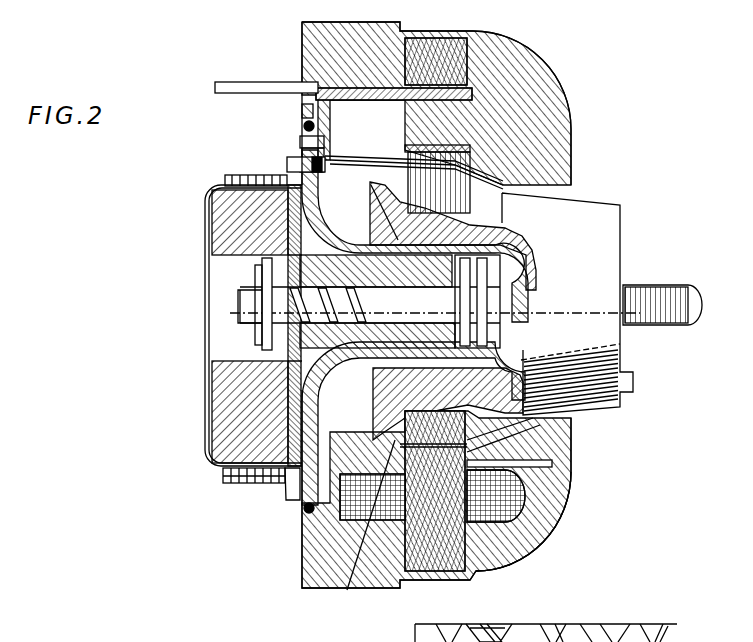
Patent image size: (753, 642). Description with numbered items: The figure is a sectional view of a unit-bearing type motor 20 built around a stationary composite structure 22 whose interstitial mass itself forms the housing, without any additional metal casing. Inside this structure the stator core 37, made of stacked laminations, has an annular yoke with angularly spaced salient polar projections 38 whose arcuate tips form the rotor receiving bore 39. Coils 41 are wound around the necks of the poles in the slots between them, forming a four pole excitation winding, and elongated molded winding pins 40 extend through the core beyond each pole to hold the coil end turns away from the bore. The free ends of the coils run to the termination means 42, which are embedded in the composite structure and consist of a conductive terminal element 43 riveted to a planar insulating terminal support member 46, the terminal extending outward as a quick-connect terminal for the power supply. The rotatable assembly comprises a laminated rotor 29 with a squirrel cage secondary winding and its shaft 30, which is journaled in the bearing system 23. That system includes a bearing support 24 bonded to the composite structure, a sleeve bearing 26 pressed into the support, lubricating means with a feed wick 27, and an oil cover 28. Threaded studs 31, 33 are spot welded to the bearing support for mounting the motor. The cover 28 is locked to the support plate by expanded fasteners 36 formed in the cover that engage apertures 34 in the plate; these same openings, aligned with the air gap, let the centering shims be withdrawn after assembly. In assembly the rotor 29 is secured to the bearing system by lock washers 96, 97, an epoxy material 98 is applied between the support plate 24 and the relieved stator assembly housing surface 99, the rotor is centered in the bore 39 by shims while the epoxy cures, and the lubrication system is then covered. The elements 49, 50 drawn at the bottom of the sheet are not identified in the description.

The unit-bearing type motor 20 is at (302, 572).
The stationary composite structure 22 is at (548, 76).
The bearing system 23 is at (299, 383).
The bearing support 24 is at (302, 110).
The sleeve bearing 26 is at (326, 268).
The feed wick 27 is at (301, 377).
The oil cover 28 is at (210, 460).
The rotor 29 is at (623, 215).
The shaft 30 is at (408, 300).
The threaded stud 31 is at (237, 176).
The threaded stud 33 is at (238, 486).
The apertures 34 is at (300, 148).
The expanded fasteners 36 is at (287, 162).
The stator core 37 is at (466, 568).
The salient polar projections 38 is at (573, 443).
The rotor receiving bore 39 is at (468, 150).
The winding pins 40 is at (556, 464).
The coils 41 is at (519, 496).
The termination means 42 is at (345, 82).
The conductive terminal element 43 is at (236, 83).
The insulating terminal support member 46 is at (488, 62).
The element 49 is at (565, 641).
The element 50 is at (600, 640).
The lock washer 96 is at (262, 339).
The lock washer 97 is at (466, 304).
The epoxy material 98 is at (305, 114).
The relieved stator assembly housing surface 99 is at (348, 590).